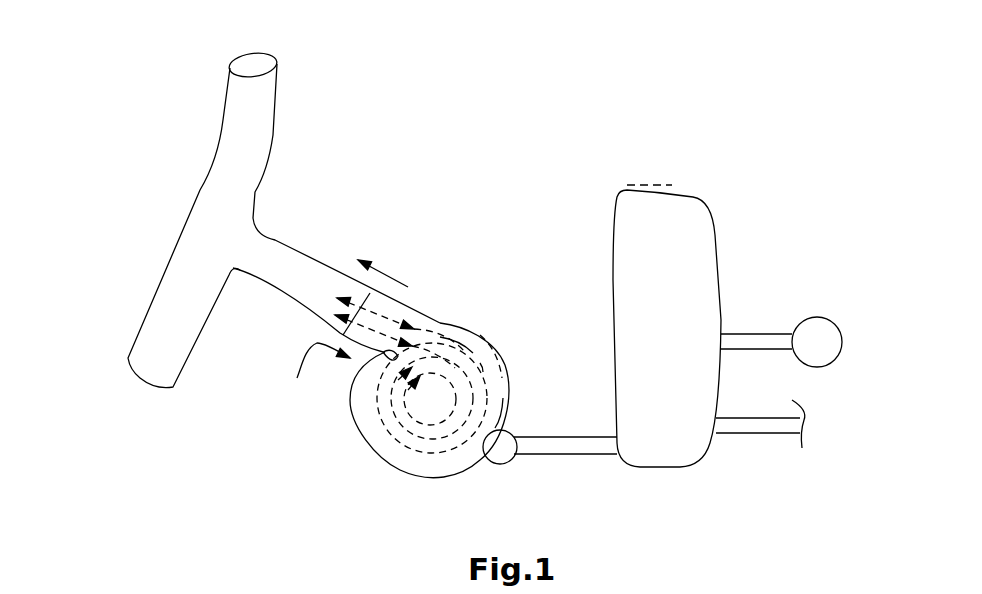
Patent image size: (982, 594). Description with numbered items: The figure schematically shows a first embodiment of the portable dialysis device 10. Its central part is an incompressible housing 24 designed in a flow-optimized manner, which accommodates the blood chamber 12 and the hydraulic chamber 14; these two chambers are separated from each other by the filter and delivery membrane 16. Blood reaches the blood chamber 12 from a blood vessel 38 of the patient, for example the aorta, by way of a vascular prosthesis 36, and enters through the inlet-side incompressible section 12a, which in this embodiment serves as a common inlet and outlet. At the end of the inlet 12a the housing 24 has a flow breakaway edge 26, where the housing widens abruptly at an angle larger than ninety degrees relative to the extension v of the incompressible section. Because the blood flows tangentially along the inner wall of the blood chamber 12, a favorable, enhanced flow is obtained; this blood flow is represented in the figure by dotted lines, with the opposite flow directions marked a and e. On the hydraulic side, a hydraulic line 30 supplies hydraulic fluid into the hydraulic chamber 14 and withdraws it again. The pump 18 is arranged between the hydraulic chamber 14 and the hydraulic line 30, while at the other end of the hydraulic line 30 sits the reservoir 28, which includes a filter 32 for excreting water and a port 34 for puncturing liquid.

The portable dialysis device 10 is at (545, 130).
The blood chamber 12 is at (481, 377).
The inlet-side incompressible section 12a is at (380, 353).
The hydraulic chamber 14 is at (502, 405).
The filter and delivery membrane 16 is at (478, 350).
The pump 18 is at (502, 448).
The housing 24 is at (511, 379).
The flow breakaway edge 26 is at (387, 357).
The reservoir 28 is at (677, 248).
The hydraulic line 30 is at (550, 445).
The filter 32 is at (650, 184).
The port 34 is at (820, 338).
The vascular prosthesis 36 is at (298, 280).
The blood vessel 38 is at (180, 303).
The outflow direction a is at (375, 278).
The inflow direction e is at (316, 369).
The extension of the incompressible section v is at (458, 330).